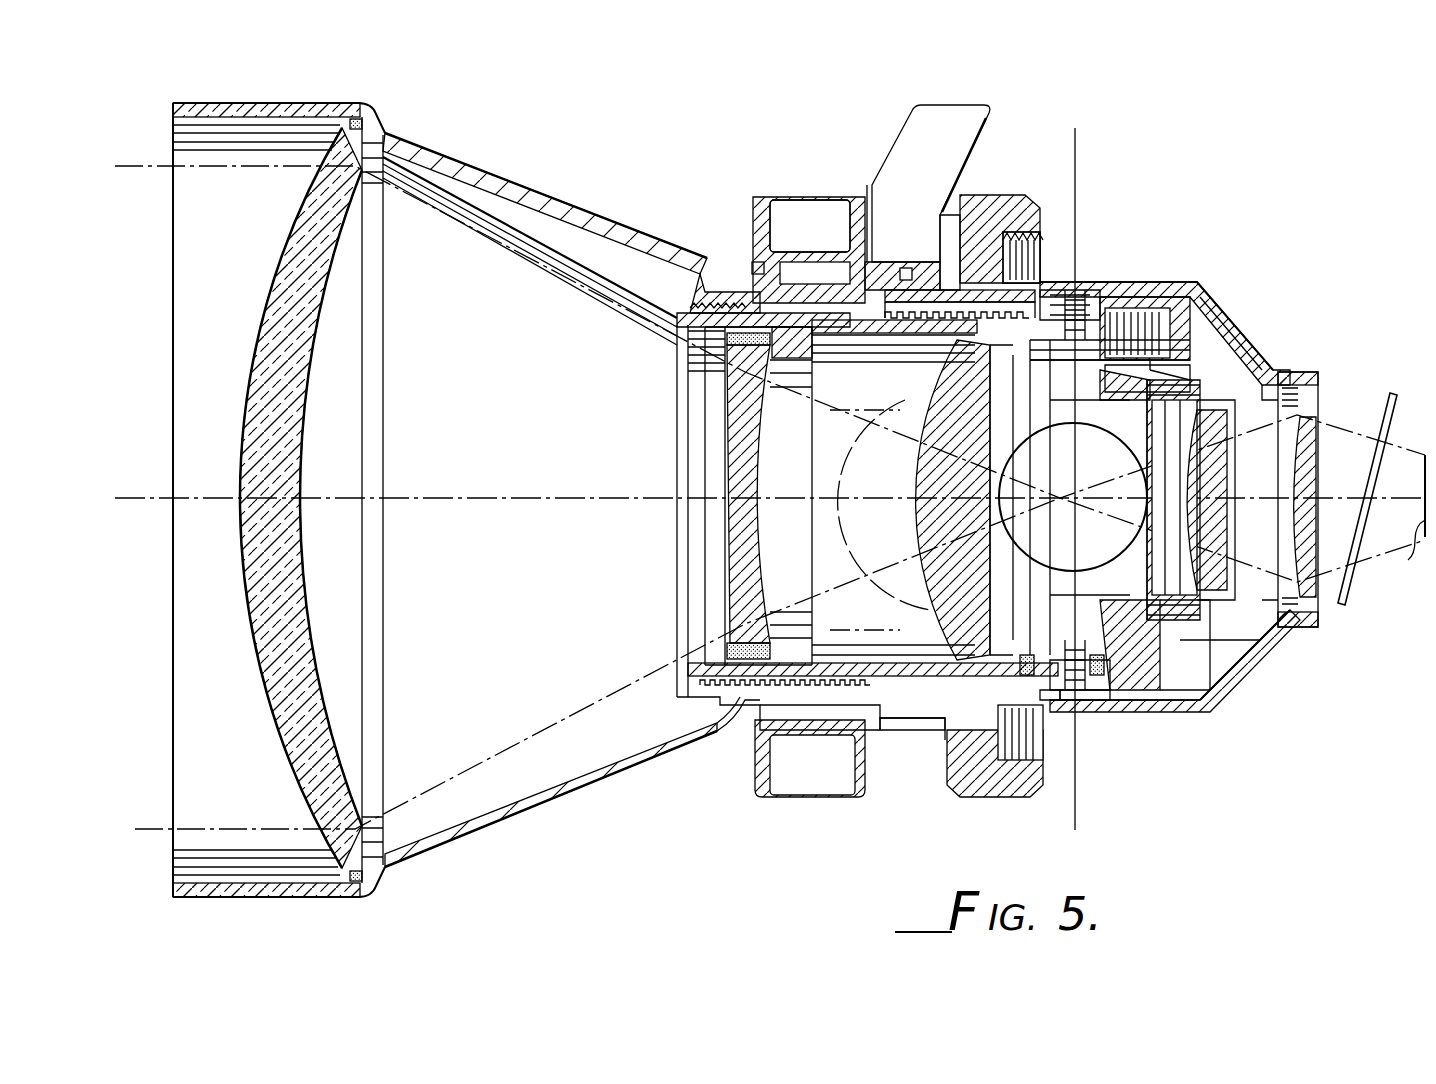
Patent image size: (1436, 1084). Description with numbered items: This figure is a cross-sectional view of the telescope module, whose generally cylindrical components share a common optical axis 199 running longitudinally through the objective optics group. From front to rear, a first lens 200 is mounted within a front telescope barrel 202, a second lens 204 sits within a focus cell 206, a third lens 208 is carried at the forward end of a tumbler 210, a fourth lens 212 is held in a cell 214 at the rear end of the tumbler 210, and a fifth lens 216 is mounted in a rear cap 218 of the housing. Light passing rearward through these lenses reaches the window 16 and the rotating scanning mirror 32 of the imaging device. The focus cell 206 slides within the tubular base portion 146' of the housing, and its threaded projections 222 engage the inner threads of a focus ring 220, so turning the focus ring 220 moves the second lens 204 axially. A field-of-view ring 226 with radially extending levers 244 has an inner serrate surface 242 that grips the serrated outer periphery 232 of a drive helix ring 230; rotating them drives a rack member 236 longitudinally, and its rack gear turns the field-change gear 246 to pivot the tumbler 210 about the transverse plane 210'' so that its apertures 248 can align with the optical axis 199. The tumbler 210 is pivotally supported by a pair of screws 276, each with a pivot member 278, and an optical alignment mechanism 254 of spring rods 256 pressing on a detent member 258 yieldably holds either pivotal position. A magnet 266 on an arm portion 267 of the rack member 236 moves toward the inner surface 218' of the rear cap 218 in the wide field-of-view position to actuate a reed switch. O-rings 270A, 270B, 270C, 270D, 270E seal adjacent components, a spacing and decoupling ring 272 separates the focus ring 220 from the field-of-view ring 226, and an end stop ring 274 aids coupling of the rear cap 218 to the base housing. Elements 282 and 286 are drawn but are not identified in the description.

The window 16 is at (1392, 393).
The scanning mirror 32 is at (1400, 519).
The tubular base portion 146' is at (710, 738).
The optical axis 199 is at (491, 493).
The first lens 200 is at (275, 300).
The front telescope barrel 202 is at (468, 158).
The second lens 204 is at (735, 430).
The focus cell 206 is at (830, 345).
The third lens 208 is at (960, 470).
The tumbler 210 is at (1177, 530).
The transverse plane 210'' is at (1084, 480).
The fourth lens 212 is at (1222, 590).
The cell 214 is at (1215, 412).
The fifth lens 216 is at (1322, 420).
The rear cap 218 is at (1187, 661).
The inner surface of the rear cap 218' is at (1307, 455).
The focus ring 220 is at (793, 193).
The threaded projections 222 is at (760, 302).
The FOV ring 226 is at (932, 745).
The drive helix ring 230 is at (918, 690).
The serrated outer periphery 232 is at (930, 690).
The rack member 236 is at (1148, 300).
The inner serrate surface 242 is at (920, 732).
The levers 244 is at (988, 118).
The field-change gear 246 is at (1118, 380).
The apertures 248 is at (1025, 552).
The optical alignment mechanism 254 is at (1215, 665).
The spring rods 256 is at (1025, 680).
The detent member 258 is at (1108, 690).
The magnet 266 is at (1240, 330).
The arm portion 267 is at (1215, 308).
The O-ring 270A is at (752, 268).
The O-ring 270B is at (810, 226).
The O-ring 270C is at (905, 268).
The O-ring 270D is at (945, 210).
The O-ring 270E is at (1045, 245).
The spacing and decoupling ring 272 is at (865, 690).
The end stop ring 274 is at (1200, 708).
The screws 276 is at (1088, 700).
The pivot member 278 is at (1100, 700).
The rack 282 is at (1092, 292).
The adjustment block 286 is at (1003, 197).